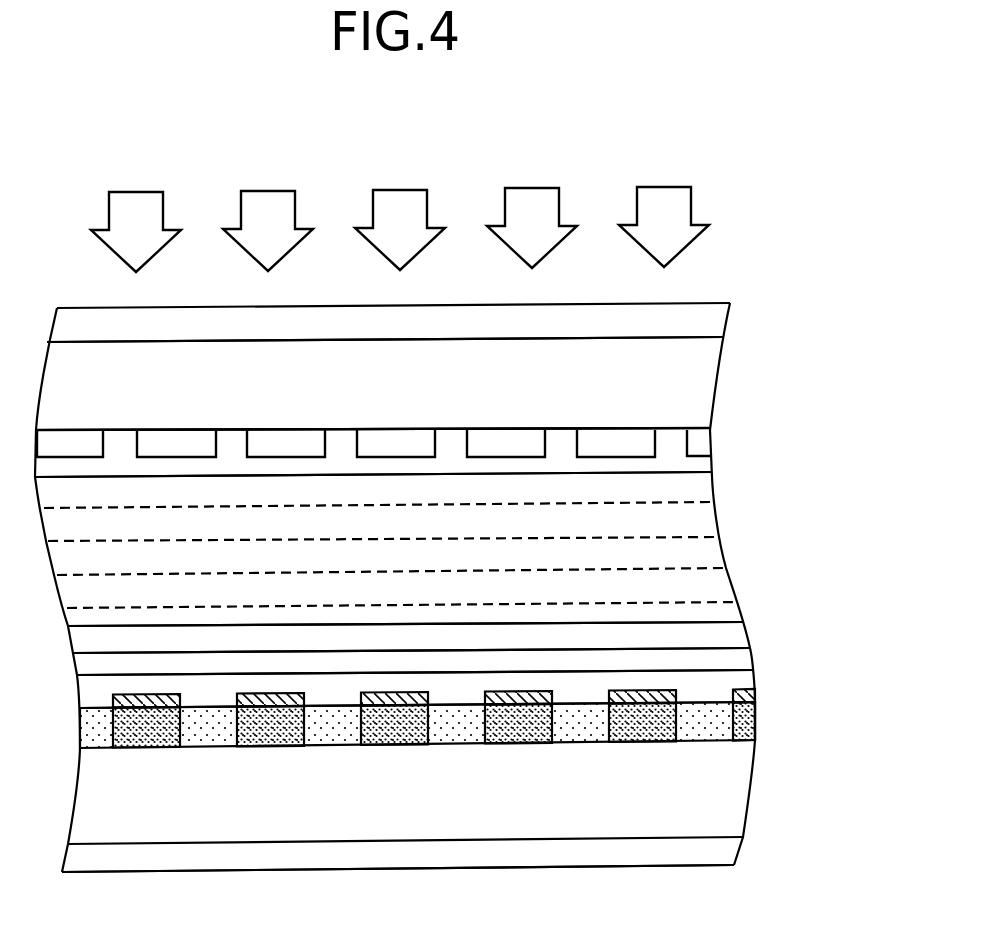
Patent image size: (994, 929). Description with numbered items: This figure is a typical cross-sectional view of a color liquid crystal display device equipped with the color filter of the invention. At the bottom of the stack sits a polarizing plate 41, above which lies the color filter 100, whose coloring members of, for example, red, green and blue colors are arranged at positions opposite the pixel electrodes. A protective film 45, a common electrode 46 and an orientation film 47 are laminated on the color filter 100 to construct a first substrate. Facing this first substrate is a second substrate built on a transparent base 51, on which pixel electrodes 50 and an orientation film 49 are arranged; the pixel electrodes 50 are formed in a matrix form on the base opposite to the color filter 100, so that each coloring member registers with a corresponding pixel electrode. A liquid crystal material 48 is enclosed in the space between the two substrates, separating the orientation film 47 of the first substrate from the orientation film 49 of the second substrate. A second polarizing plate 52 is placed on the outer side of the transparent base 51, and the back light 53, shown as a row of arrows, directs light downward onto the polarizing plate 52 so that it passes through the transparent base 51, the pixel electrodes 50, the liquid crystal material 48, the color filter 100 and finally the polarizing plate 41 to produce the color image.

The polarizing plate 41 is at (727, 847).
The protective film 45 is at (722, 675).
The common electrode 46 is at (722, 653).
The orientation film 47 is at (722, 633).
The liquid crystal material 48 is at (710, 552).
The orientation film 49 is at (693, 463).
The pixel electrodes 50 is at (693, 440).
The transparent base 51 is at (693, 377).
The polarizing plate 52 is at (693, 320).
The back light 53 is at (677, 240).
The color filter 100 is at (777, 690).